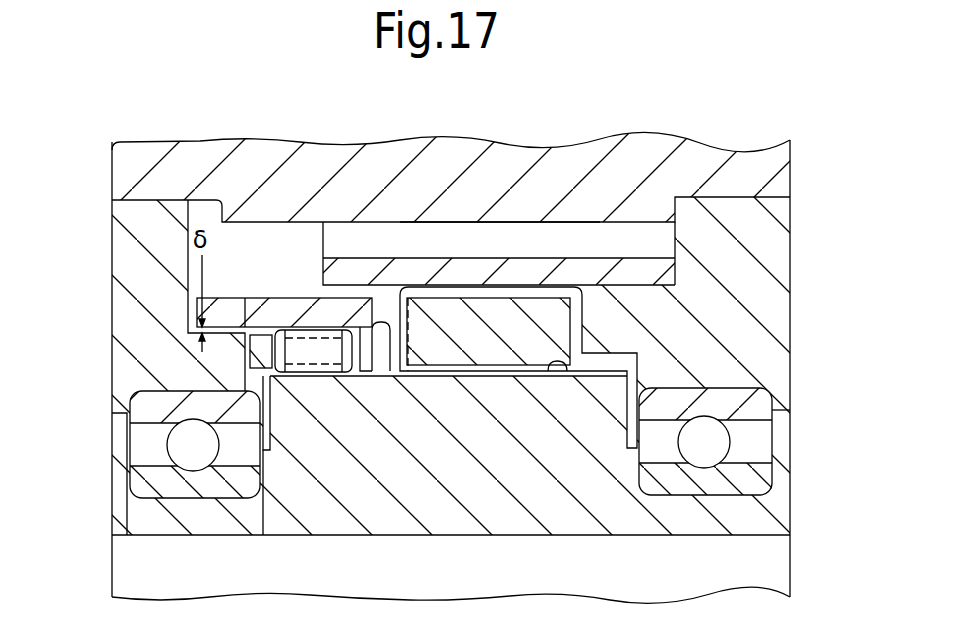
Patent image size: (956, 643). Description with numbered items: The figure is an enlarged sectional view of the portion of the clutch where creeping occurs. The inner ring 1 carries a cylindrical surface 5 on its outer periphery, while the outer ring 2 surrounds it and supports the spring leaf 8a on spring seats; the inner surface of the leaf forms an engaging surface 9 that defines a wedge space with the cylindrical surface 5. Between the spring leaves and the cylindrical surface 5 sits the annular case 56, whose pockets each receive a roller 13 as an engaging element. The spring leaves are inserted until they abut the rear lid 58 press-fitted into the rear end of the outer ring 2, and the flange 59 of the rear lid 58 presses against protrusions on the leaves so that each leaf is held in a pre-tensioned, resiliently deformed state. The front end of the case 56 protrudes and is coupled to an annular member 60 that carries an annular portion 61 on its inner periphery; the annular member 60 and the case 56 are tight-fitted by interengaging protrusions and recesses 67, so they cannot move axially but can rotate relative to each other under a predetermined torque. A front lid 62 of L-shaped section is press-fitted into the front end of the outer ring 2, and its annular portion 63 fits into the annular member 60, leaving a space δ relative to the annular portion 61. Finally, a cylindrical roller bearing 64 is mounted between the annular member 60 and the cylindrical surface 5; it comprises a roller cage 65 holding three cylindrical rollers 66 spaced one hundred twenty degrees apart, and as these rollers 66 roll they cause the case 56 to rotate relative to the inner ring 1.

The inner ring 1 is at (627, 505).
The outer ring 2 is at (134, 158).
The cylindrical surface 5 is at (571, 375).
The spring leaf 8a is at (570, 265).
The engaging surface 9 is at (466, 286).
The roller 13 is at (513, 292).
The annular case 56 is at (507, 350).
The rear lid 58 is at (782, 300).
The flange 59 is at (617, 278).
The annular member 60 is at (277, 310).
The annular portion 61 is at (241, 325).
The front lid 62 is at (127, 272).
The annular portion 63 is at (188, 333).
The cylindrical roller bearing 64 is at (290, 376).
The roller cage 65 is at (257, 362).
The cylindrical roller 66 is at (330, 372).
The protrusions and recesses 67 is at (385, 372).